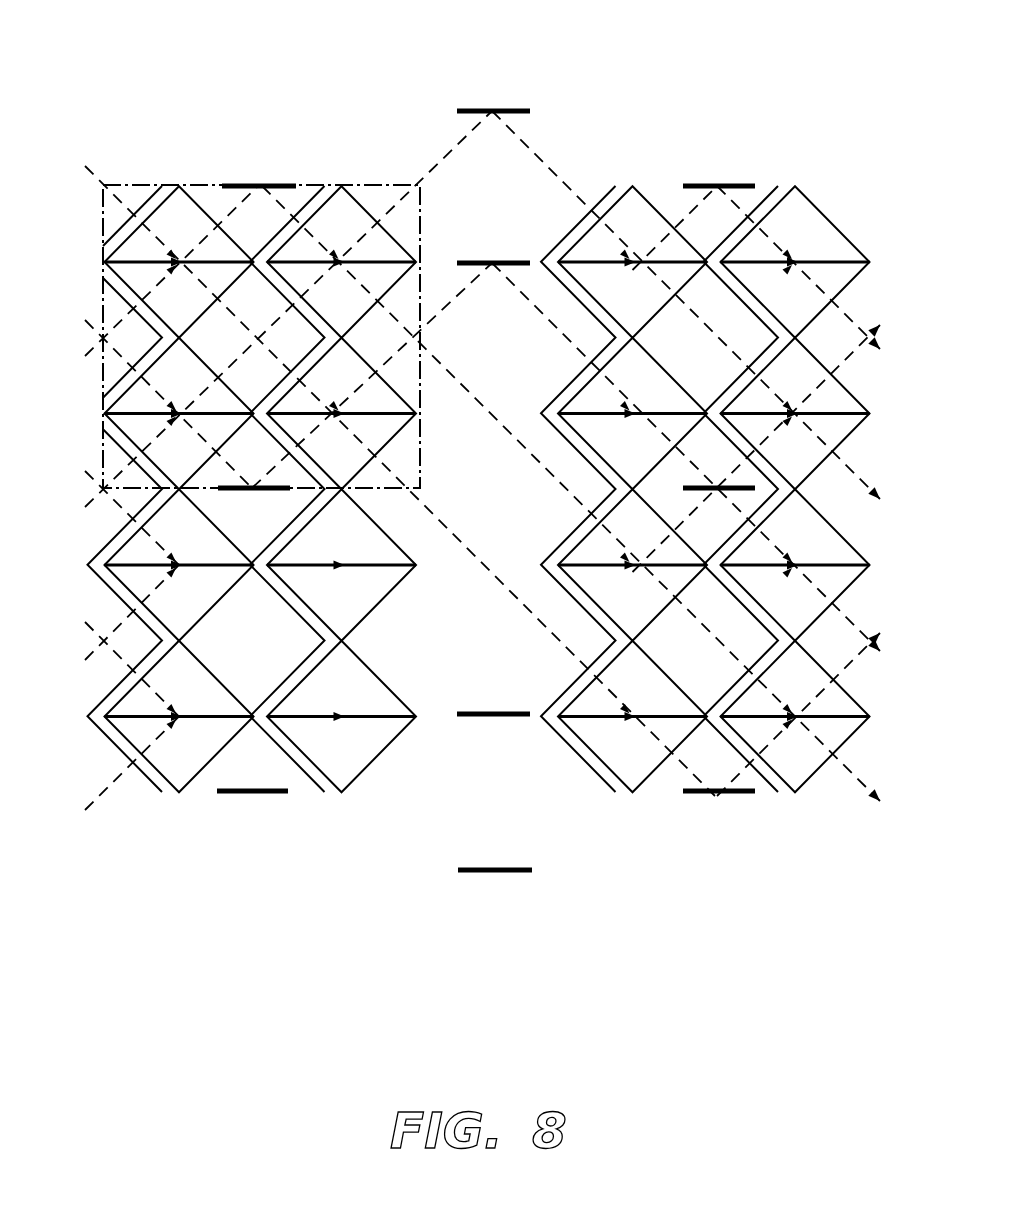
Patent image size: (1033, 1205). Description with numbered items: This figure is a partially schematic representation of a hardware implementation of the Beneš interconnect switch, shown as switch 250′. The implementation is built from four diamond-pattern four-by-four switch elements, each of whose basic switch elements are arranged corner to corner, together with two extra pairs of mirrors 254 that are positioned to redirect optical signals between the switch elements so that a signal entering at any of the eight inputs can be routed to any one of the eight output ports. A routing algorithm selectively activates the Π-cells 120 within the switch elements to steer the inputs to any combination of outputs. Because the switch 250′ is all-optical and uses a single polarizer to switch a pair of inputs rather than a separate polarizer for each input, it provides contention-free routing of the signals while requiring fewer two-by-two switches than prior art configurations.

The Π-cells 120 is at (145, 205).
The mirrors 254 is at (490, 492).
The switch 250′ is at (700, 976).